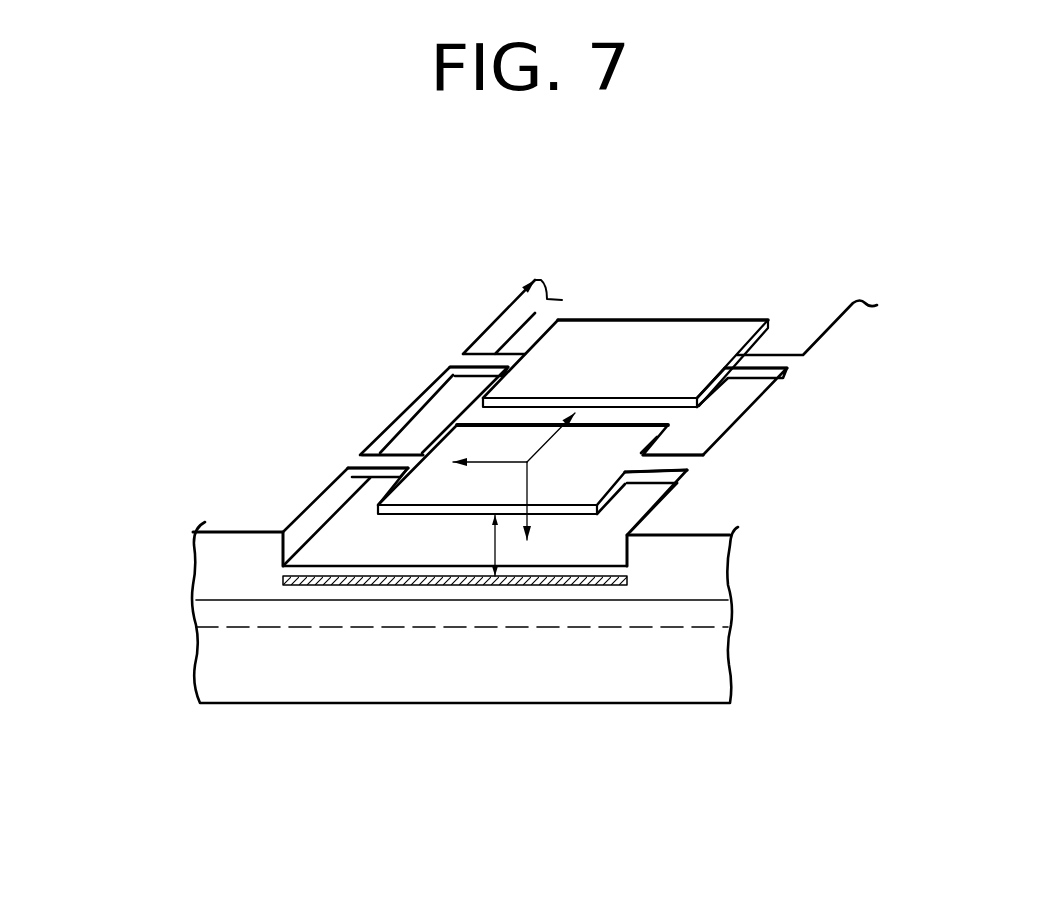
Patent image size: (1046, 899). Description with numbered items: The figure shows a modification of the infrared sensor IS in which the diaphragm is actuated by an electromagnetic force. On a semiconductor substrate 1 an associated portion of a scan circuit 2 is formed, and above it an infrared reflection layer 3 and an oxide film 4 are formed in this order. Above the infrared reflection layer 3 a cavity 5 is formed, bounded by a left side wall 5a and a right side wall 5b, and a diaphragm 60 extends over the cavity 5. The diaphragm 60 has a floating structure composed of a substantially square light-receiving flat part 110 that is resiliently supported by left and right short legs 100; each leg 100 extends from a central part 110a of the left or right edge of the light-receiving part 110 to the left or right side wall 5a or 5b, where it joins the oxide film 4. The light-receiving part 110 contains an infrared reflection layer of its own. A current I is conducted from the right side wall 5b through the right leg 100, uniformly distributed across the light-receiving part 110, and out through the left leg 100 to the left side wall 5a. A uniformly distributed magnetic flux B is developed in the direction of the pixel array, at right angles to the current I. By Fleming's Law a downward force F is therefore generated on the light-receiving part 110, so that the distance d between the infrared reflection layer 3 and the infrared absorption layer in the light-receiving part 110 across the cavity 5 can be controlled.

The semiconductor substrate 1 is at (717, 682).
The scan circuit 2 is at (718, 625).
The infrared reflection layer 3 is at (285, 580).
The oxide film 4 is at (717, 578).
The cavity 5 is at (442, 563).
The left side wall 5a is at (317, 518).
The right side wall 5b is at (637, 523).
The diaphragm 60 is at (685, 318).
The short legs 100 is at (382, 450).
The light-receiving flat part 110 is at (670, 430).
The central part of edge 110a is at (417, 462).
The image sensor IS is at (677, 213).
The current I is at (476, 483).
The magnetic flux B is at (559, 451).
The downward force F is at (545, 528).
The gap distance d is at (487, 548).